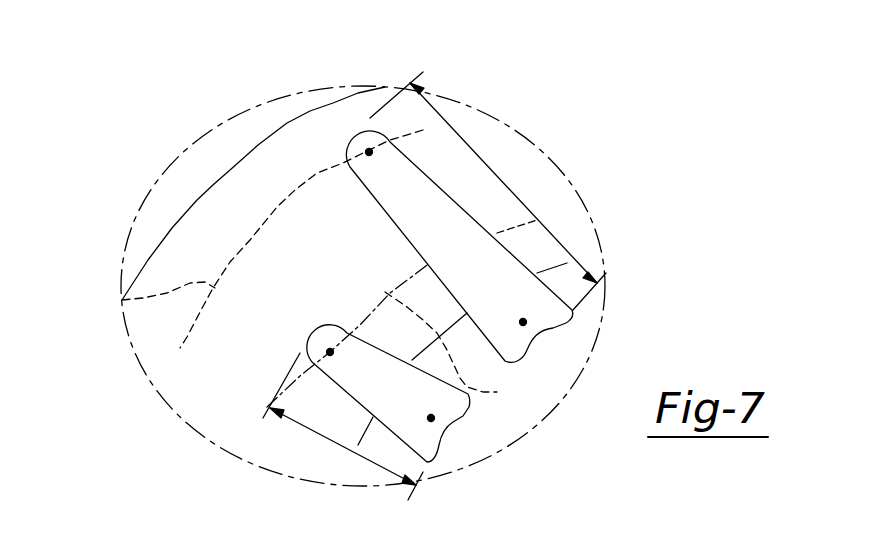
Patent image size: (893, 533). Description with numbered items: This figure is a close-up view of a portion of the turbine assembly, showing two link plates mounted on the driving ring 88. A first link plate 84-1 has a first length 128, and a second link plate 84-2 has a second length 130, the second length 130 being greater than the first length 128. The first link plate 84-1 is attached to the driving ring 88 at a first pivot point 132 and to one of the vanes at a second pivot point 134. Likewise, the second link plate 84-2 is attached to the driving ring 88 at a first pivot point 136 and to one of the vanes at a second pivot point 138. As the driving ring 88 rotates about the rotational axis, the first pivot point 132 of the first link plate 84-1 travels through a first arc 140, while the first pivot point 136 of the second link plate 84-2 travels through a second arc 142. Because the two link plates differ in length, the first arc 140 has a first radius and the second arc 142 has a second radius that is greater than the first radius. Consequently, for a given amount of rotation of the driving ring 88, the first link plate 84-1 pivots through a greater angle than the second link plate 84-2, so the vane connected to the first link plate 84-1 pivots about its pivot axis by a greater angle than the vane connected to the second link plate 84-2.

The driving ring 88 is at (230, 170).
The first link plate 84-1 is at (372, 340).
The second link plate 84-2 is at (360, 185).
The first length 128 is at (343, 426).
The second length 130 is at (488, 191).
The first pivot point 132 is at (330, 352).
The second pivot point 134 is at (431, 418).
The first pivot point 136 is at (369, 152).
The second pivot point 138 is at (523, 322).
The first arc 140 is at (460, 349).
The second arc 142 is at (122, 300).